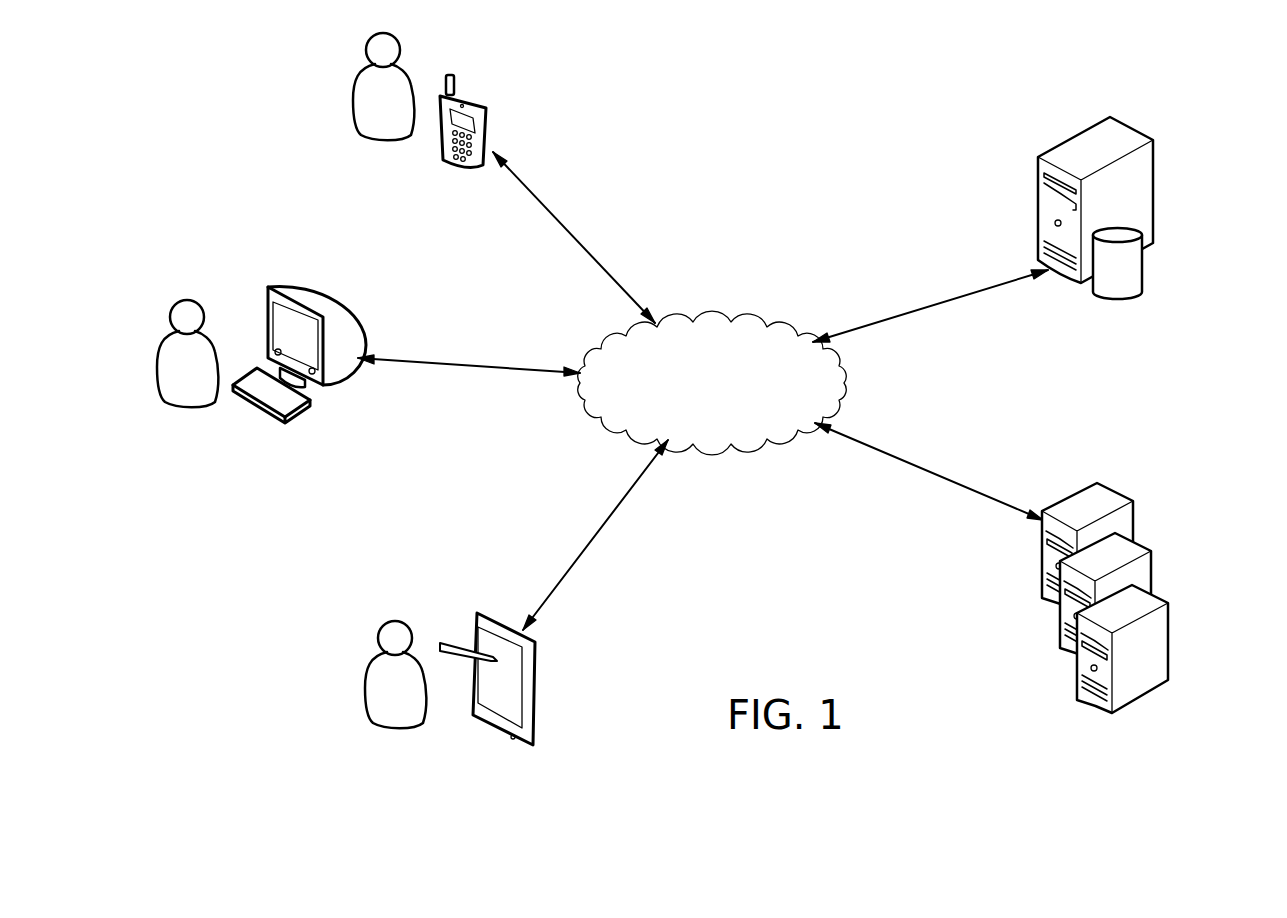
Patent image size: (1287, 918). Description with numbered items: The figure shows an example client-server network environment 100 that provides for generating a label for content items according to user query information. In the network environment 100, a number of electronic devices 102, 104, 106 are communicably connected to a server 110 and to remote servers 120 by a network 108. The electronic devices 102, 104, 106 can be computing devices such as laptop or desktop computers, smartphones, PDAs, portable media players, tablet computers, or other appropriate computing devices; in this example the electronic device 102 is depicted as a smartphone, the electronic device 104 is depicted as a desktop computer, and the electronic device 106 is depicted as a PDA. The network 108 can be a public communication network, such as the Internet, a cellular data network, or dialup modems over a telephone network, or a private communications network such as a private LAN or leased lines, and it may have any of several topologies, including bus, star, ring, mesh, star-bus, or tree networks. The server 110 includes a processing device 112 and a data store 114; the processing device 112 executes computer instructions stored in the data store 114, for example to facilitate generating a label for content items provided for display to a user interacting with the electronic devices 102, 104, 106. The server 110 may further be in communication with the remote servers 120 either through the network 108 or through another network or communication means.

The network environment 100 is at (824, 82).
The electronic device 102 is at (478, 96).
The electronic device 104 is at (363, 328).
The electronic device 106 is at (482, 612).
The network 108 is at (712, 320).
The server 110 is at (1040, 299).
The processing device 112 is at (1130, 125).
The data store 114 is at (1143, 292).
The remote servers 120 is at (1036, 679).